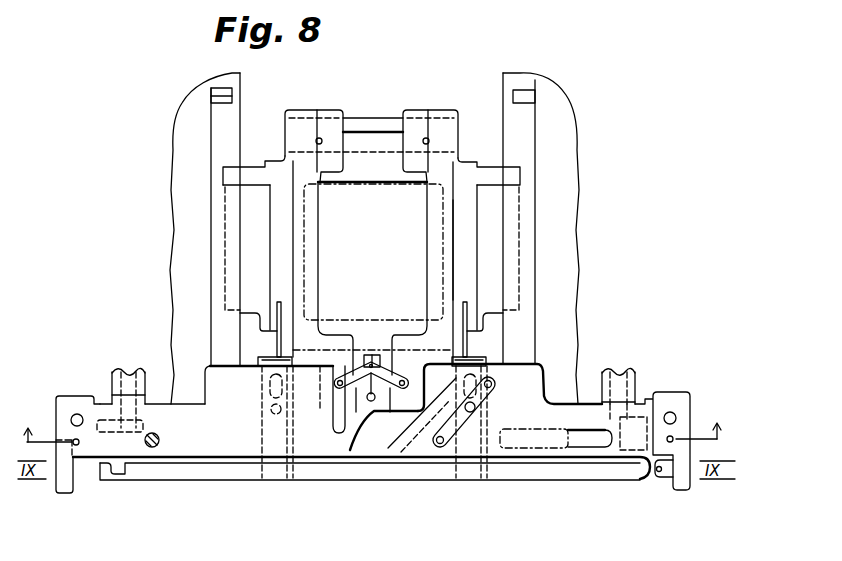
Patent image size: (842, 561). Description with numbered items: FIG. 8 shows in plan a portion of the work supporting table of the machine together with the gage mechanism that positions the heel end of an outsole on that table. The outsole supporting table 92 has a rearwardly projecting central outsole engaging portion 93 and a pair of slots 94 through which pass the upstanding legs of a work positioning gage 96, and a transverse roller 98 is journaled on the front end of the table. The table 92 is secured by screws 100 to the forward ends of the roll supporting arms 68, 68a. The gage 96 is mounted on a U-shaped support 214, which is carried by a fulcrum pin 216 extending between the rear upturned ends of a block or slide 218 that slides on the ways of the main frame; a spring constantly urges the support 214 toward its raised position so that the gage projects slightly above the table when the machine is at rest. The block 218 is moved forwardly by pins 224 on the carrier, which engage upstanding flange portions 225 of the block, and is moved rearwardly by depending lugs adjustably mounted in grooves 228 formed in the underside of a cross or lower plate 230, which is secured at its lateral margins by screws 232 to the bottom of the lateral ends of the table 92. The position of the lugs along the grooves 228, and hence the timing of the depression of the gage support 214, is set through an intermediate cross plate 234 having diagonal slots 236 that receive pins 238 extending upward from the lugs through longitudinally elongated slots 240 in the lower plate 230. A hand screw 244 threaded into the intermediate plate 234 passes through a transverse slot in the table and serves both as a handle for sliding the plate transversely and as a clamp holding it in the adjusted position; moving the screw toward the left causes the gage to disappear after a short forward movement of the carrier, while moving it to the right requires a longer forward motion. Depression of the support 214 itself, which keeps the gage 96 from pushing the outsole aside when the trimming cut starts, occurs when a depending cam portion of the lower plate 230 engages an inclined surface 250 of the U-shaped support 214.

The roll supporting arm 68 is at (113, 382).
The roll supporting arm 68a is at (635, 373).
The outsole supporting table 92 is at (371, 362).
The central outsole engaging portion 93 is at (359, 350).
The slot 94 is at (340, 396).
The work positioning gage 96 is at (381, 355).
The transverse roller 98 is at (665, 478).
The screw 100 is at (80, 443).
The U-shaped support 214 is at (427, 191).
The fulcrum pin 216 is at (360, 117).
The block or slide 218 is at (465, 160).
The pin 224 is at (228, 98).
The upstanding flange portion 225 is at (230, 174).
The groove 228 is at (467, 445).
The cross or lower plate 230 is at (540, 480).
The screw 232 is at (676, 416).
The intermediate cross plate 234 is at (312, 463).
The diagonal slot 236 is at (447, 450).
The pin 238 is at (474, 405).
The longitudinally elongated slot 240 is at (441, 418).
The hand screw 244 is at (152, 448).
The inclined surface 250 is at (368, 448).